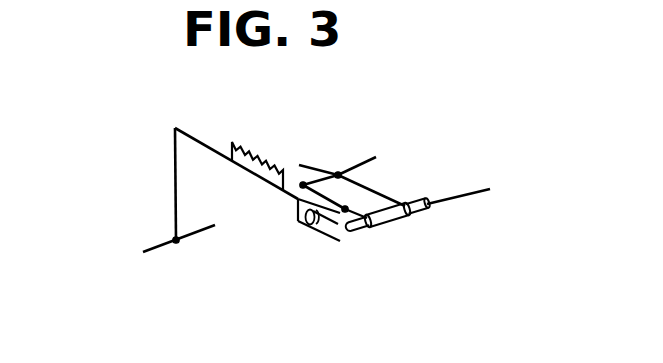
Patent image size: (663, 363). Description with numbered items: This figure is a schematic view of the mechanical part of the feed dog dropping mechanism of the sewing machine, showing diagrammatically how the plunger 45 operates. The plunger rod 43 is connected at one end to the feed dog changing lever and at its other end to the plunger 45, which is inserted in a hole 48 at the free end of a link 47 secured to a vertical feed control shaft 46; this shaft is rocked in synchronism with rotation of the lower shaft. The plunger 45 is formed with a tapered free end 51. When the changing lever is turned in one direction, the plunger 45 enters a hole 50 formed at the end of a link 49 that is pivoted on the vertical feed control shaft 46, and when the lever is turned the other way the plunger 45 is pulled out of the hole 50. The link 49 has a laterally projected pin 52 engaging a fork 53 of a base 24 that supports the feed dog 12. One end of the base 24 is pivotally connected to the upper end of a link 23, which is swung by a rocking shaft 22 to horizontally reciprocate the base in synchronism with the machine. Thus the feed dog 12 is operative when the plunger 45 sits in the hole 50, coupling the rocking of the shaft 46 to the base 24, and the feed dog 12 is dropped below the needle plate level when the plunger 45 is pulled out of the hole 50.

The feed dog 12 is at (253, 150).
The rocking shaft 22 is at (155, 247).
The link 23 is at (174, 162).
The base 24 is at (198, 141).
The plunger rod 43 is at (472, 197).
The plunger 45 is at (392, 222).
The vertical feed control shaft 46 is at (358, 163).
The link 47 is at (380, 193).
The hole 48 is at (423, 221).
The link 49 is at (300, 204).
The hole 50 is at (380, 222).
The tapered free end 51 is at (350, 232).
The laterally projected pin 52 is at (302, 226).
The fork 53 is at (324, 236).